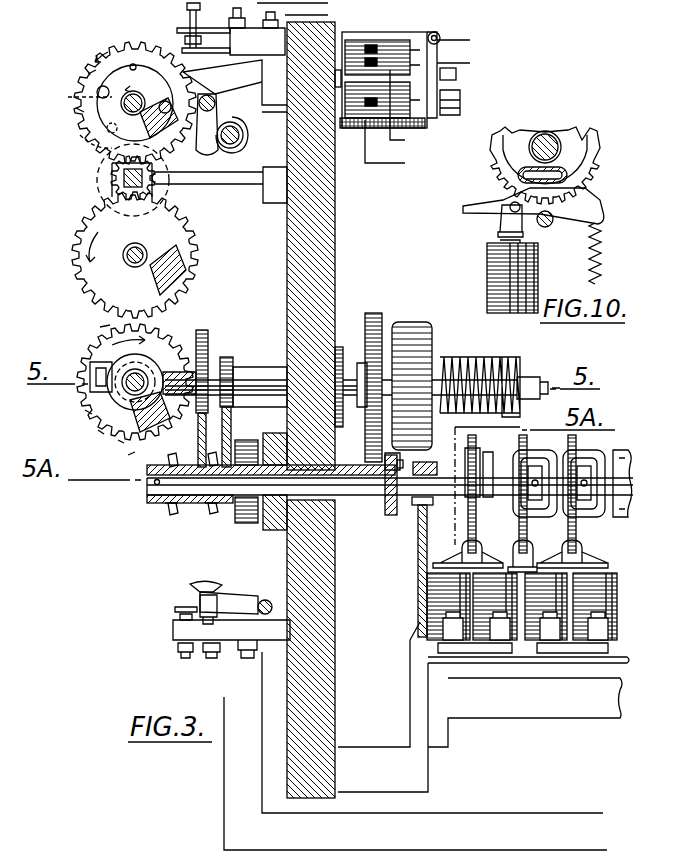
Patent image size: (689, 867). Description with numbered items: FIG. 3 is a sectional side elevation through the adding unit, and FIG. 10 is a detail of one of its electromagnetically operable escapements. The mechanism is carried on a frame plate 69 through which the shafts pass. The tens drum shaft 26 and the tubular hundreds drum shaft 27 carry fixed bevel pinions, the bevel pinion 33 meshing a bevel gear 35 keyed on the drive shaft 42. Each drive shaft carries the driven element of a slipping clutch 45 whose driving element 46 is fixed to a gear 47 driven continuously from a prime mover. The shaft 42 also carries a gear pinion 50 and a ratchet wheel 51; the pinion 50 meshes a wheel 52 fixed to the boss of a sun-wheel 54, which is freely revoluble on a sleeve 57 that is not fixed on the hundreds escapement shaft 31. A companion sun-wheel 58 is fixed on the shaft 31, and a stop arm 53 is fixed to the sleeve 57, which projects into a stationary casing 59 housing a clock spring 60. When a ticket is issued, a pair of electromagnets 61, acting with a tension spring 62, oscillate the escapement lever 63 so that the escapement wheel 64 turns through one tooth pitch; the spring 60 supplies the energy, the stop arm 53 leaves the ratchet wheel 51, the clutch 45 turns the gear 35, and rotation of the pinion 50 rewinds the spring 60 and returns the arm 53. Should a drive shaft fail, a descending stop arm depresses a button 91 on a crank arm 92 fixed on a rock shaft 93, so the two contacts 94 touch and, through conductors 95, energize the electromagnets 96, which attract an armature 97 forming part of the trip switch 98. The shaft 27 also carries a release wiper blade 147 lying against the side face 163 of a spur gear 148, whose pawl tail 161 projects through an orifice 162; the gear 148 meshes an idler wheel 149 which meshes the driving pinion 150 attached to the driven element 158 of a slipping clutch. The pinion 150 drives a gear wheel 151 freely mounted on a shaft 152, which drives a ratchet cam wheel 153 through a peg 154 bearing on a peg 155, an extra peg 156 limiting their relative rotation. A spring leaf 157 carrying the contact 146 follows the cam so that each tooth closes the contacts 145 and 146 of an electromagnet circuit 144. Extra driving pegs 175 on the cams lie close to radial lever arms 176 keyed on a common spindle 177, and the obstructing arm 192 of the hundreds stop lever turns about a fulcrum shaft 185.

In FIG. 3, the electromagnet circuit 144 is at (332, 10).
In FIG. 3, the contact 145 is at (186, 28).
In FIG. 3, the contact 146 is at (165, 36).
In FIG. 3, the spring leaf 157 is at (229, 21).
In FIG. 3, the shaft 152 is at (110, 53).
In FIG. 3, the ratchet shaped cam wheel 153 is at (87, 73).
In FIG. 3, the peg 154 is at (75, 98).
In FIG. 3, the driven gear wheel 151 is at (76, 110).
In FIG. 3, the peg 155 is at (80, 136).
In FIG. 3, the extra peg 156 is at (97, 161).
In FIG. 3, the driven element of slipping clutch 158 is at (108, 176).
In FIG. 3, the hundreds driving pinion 150 is at (108, 192).
In FIG. 3, the extra driving peg 175 is at (188, 88).
In FIG. 3, the common spindle 177 is at (216, 102).
In FIG. 3, the radial lever arm 176 is at (236, 126).
In FIG. 3, the fulcrum shaft 185 is at (245, 146).
In FIG. 3, the obstructing arm 192 is at (202, 185).
In FIG. 3, the electromagnets 96 is at (401, 38).
In FIG. 3, the armature 97 is at (457, 80).
In FIG. 3, the trip switch 98 is at (472, 100).
In FIG. 3, the conductors 95 is at (405, 163).
In FIG. 3, the frame plate 69 is at (336, 218).
In FIG. 3, the idler wheel 149 is at (135, 255).
In FIG. 3, the gear side face 163 is at (100, 325).
In FIG. 3, the release wiper blade 147 is at (98, 349).
In FIG. 3, the pawl tail 161 is at (94, 370).
In FIG. 3, the orifice 162 is at (90, 378).
In FIG. 3, the bevel pinion 33 is at (85, 413).
In FIG. 3, the bevel gear 35 is at (198, 340).
In FIG. 3, the ratchet wheel 51 is at (206, 333).
In FIG. 3, the drive shaft 42 is at (222, 358).
In FIG. 3, the gear pinion 50 is at (235, 364).
In FIG. 3, the wheel 52 is at (232, 419).
In FIG. 3, the gear 47 is at (366, 313).
In FIG. 3, the clutch driving element 46 is at (383, 313).
In FIG. 3, the slipping clutch 45 is at (434, 324).
In FIG. 3, the tubular shaft 27 is at (98, 430).
In FIG. 3, the shaft 26 is at (120, 443).
In FIG. 3, the stop arm 53 is at (168, 455).
In FIG. 3, the spur gear 148 is at (130, 456).
In FIG. 3, the hundreds escapement shaft 31 is at (147, 496).
In FIG. 3, the companion sun-wheel 58 is at (172, 505).
In FIG. 3, the sleeve 57 is at (196, 505).
In FIG. 3, the sun-wheel 54 is at (216, 504).
In FIG. 3, the clock spring 60 is at (246, 525).
In FIG. 3, the stationary casing 59 is at (262, 531).
In FIG. 3, the button 91 is at (198, 586).
In FIG. 3, the crank arm 92 is at (244, 596).
In FIG. 3, the rock shaft 93 is at (267, 600).
In FIG. 3, the contacts 94 is at (176, 612).
In FIG. 3, the escapement wheel 64 is at (519, 526).
In FIG. 10, the escapement wheel 64 is at (585, 167).
In FIG. 3, the electromagnets 61 is at (420, 607).
In FIG. 10, the electromagnets 61 is at (538, 276).
In FIG. 10, the escapement lever 63 is at (533, 212).
In FIG. 10, the tension spring 62 is at (598, 258).